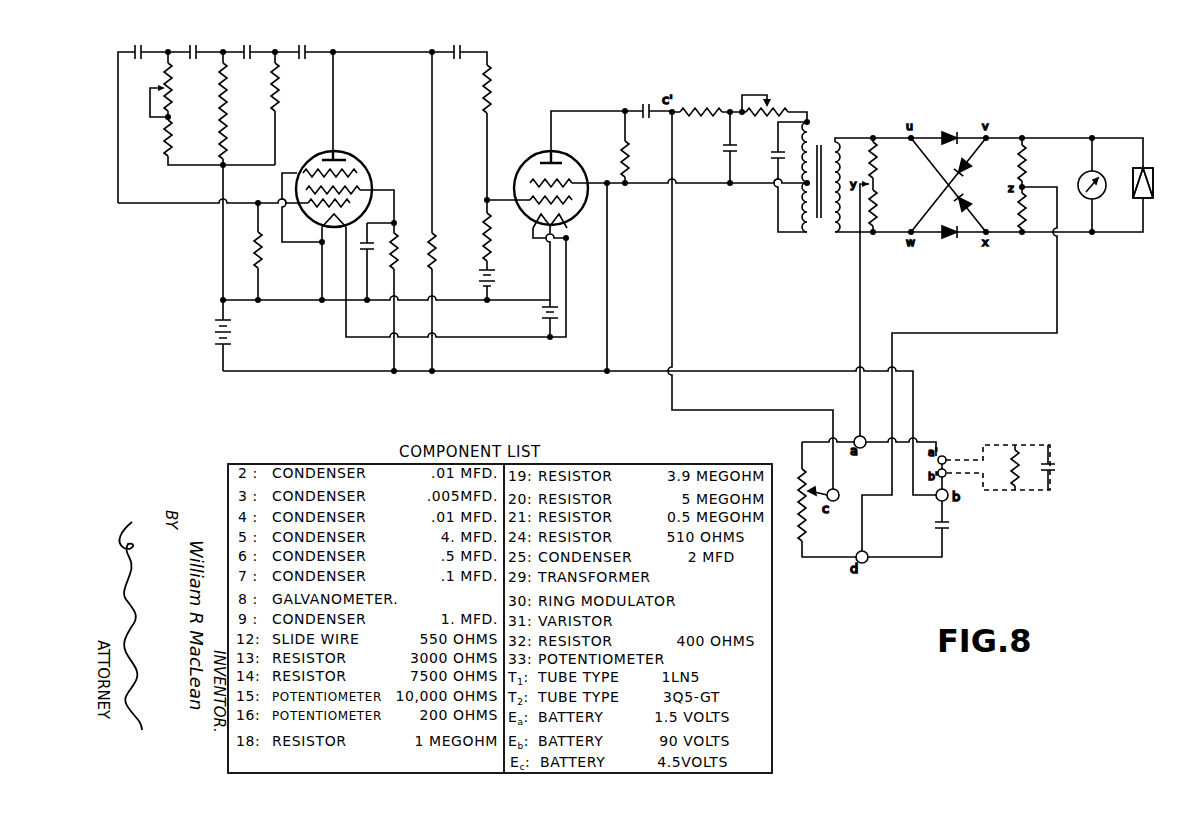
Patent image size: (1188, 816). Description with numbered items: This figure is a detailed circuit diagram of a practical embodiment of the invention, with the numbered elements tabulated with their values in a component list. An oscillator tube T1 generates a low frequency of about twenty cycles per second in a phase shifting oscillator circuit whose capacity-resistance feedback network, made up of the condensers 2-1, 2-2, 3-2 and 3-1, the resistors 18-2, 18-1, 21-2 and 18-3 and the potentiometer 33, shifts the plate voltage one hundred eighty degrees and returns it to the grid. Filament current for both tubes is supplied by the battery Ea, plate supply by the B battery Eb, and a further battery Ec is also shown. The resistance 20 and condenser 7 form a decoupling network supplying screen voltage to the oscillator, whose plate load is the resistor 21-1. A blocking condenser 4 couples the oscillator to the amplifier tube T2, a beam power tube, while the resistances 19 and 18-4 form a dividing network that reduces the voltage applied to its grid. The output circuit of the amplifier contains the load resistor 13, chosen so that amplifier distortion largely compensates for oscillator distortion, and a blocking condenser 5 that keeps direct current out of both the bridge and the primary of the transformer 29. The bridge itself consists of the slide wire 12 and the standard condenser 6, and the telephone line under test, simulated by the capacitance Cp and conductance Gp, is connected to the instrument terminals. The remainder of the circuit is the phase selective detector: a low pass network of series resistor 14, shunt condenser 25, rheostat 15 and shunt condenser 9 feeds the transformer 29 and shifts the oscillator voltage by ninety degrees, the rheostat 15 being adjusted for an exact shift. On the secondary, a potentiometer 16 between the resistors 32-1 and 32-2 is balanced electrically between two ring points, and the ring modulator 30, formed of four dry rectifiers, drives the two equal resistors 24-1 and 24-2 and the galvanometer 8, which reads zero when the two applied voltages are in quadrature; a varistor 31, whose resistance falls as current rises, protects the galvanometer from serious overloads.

The condenser 3-1 is at (138, 42).
The condenser 3-2 is at (193, 42).
The condenser 2-2 is at (247, 43).
The condenser 2-1 is at (302, 43).
The blocking condenser 4 is at (456, 43).
The potentiometer 33 is at (171, 90).
The resistor 21-2 is at (185, 138).
The resistor 18-1 is at (239, 111).
The resistor 18-2 is at (292, 87).
The resistor 18-3 is at (275, 250).
The condenser 7 is at (377, 261).
The resistance 20 is at (404, 258).
The load resistor 21-1 is at (449, 258).
The resistance 19 is at (498, 89).
The resistance 18-4 is at (504, 239).
The battery Ec is at (494, 281).
The filament battery Ea is at (540, 316).
The plate supply battery Eb is at (210, 332).
The oscillator tube T1 is at (334, 182).
The amplifier tube T2 is at (551, 183).
The load resistor 13 is at (635, 159).
The blocking condenser 5 is at (645, 103).
The resistor 14 is at (701, 102).
The rheostat 15 is at (767, 99).
The condenser 25 is at (720, 154).
The condenser 9 is at (773, 163).
The transformer 29 is at (821, 176).
The resistor 32-1 is at (889, 160).
The potentiometer 16 is at (880, 185).
The resistor 32-2 is at (889, 208).
The ring modulator 30 is at (962, 185).
The resistor 24-1 is at (1039, 163).
The resistor 24-2 is at (1036, 209).
The galvanometer 8 is at (1093, 192).
The varistor 31 is at (1150, 191).
The slide wire 12 is at (792, 505).
The standard condenser 6 is at (947, 531).
The line conductance Gp is at (998, 467).
The line capacitance Cp is at (1058, 467).